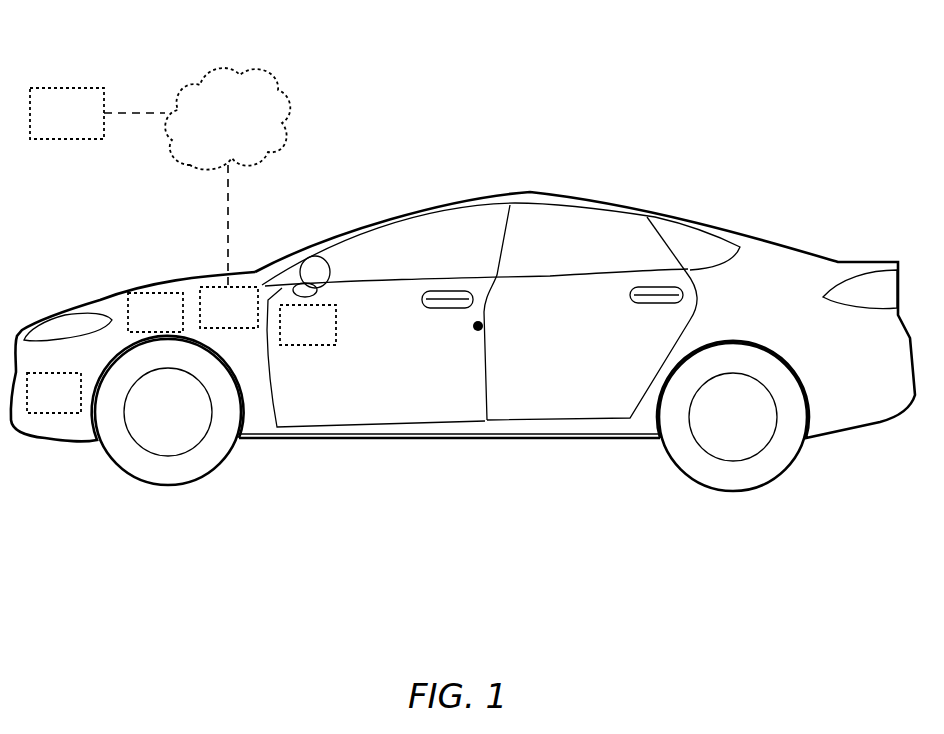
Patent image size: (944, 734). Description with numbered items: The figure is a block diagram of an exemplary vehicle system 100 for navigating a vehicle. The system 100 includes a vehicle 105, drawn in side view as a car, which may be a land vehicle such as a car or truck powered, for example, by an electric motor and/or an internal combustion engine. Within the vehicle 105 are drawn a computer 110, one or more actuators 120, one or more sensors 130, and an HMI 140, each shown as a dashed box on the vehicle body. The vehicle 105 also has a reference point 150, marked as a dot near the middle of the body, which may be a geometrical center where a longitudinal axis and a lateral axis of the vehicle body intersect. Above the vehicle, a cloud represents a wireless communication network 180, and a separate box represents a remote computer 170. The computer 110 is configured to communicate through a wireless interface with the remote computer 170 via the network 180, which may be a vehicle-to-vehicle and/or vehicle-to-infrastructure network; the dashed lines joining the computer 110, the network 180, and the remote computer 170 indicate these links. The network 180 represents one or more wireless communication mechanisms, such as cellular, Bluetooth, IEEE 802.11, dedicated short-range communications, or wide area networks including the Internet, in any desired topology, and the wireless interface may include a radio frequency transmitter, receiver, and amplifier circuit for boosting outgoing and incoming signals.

The vehicle system 100 is at (412, 74).
The vehicle 105 is at (540, 192).
The computer 110 is at (229, 307).
The actuator 120 is at (155, 312).
The sensor 130 is at (54, 393).
The HMI 140 is at (308, 325).
The reference point 150 is at (475, 332).
The remote computer 170 is at (97, 113).
The communication network 180 is at (227, 177).